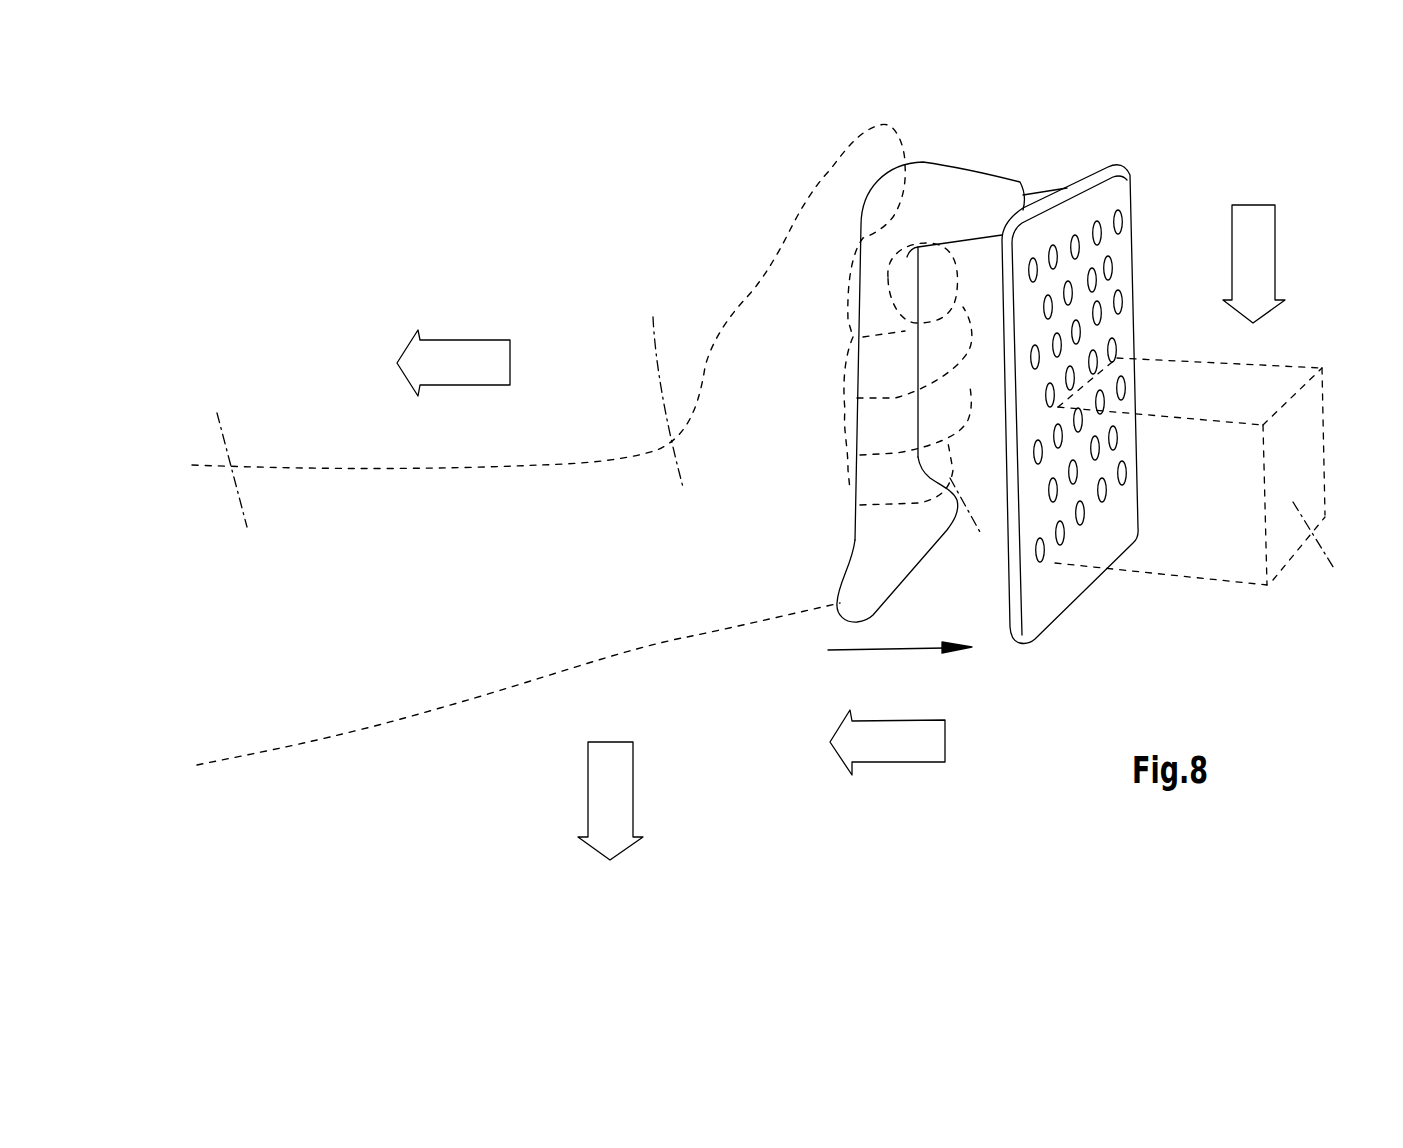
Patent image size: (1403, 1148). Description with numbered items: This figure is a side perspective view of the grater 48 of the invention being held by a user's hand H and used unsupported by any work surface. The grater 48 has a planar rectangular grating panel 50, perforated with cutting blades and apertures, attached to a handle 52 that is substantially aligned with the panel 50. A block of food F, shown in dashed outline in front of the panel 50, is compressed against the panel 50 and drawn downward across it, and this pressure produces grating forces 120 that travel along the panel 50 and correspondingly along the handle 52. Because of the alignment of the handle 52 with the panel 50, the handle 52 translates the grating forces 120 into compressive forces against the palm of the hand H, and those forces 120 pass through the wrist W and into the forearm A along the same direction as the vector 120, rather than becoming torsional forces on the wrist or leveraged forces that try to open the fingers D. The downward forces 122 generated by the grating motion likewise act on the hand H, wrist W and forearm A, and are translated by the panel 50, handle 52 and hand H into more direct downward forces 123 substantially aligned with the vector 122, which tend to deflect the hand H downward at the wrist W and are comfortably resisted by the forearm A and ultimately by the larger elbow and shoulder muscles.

The grater 48 is at (873, 588).
The grating panel 50 is at (1065, 220).
The handle 52 is at (962, 190).
The grating forces 120 is at (480, 368).
The downward forces 122 is at (1248, 245).
The downward forces 123 is at (603, 782).
The forearm A is at (228, 459).
The wrist W is at (664, 389).
The fingers D is at (968, 519).
The food F is at (1198, 481).
The hand H is at (813, 573).